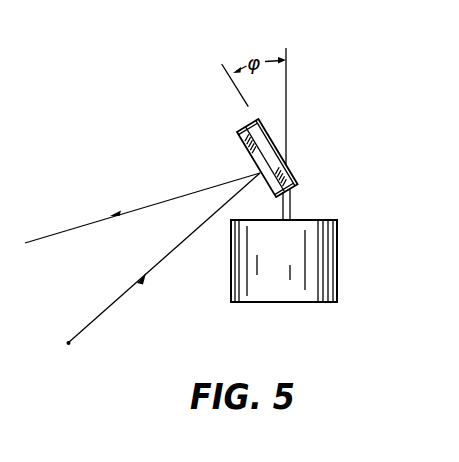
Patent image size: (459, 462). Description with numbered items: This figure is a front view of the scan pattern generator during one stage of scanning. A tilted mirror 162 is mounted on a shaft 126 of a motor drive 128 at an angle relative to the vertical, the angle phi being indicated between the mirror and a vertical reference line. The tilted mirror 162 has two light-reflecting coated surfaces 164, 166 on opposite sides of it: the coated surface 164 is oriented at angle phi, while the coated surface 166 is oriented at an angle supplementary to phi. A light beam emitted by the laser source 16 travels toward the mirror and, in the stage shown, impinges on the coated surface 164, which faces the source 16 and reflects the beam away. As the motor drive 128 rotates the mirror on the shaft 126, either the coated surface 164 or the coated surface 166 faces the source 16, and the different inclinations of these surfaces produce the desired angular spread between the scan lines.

The laser source 16 is at (68, 344).
The tilted mirror 162 is at (249, 130).
The coated surface 164 is at (242, 147).
The coated surface 166 is at (288, 176).
The shaft 126 is at (292, 203).
The motor drive 128 is at (322, 268).